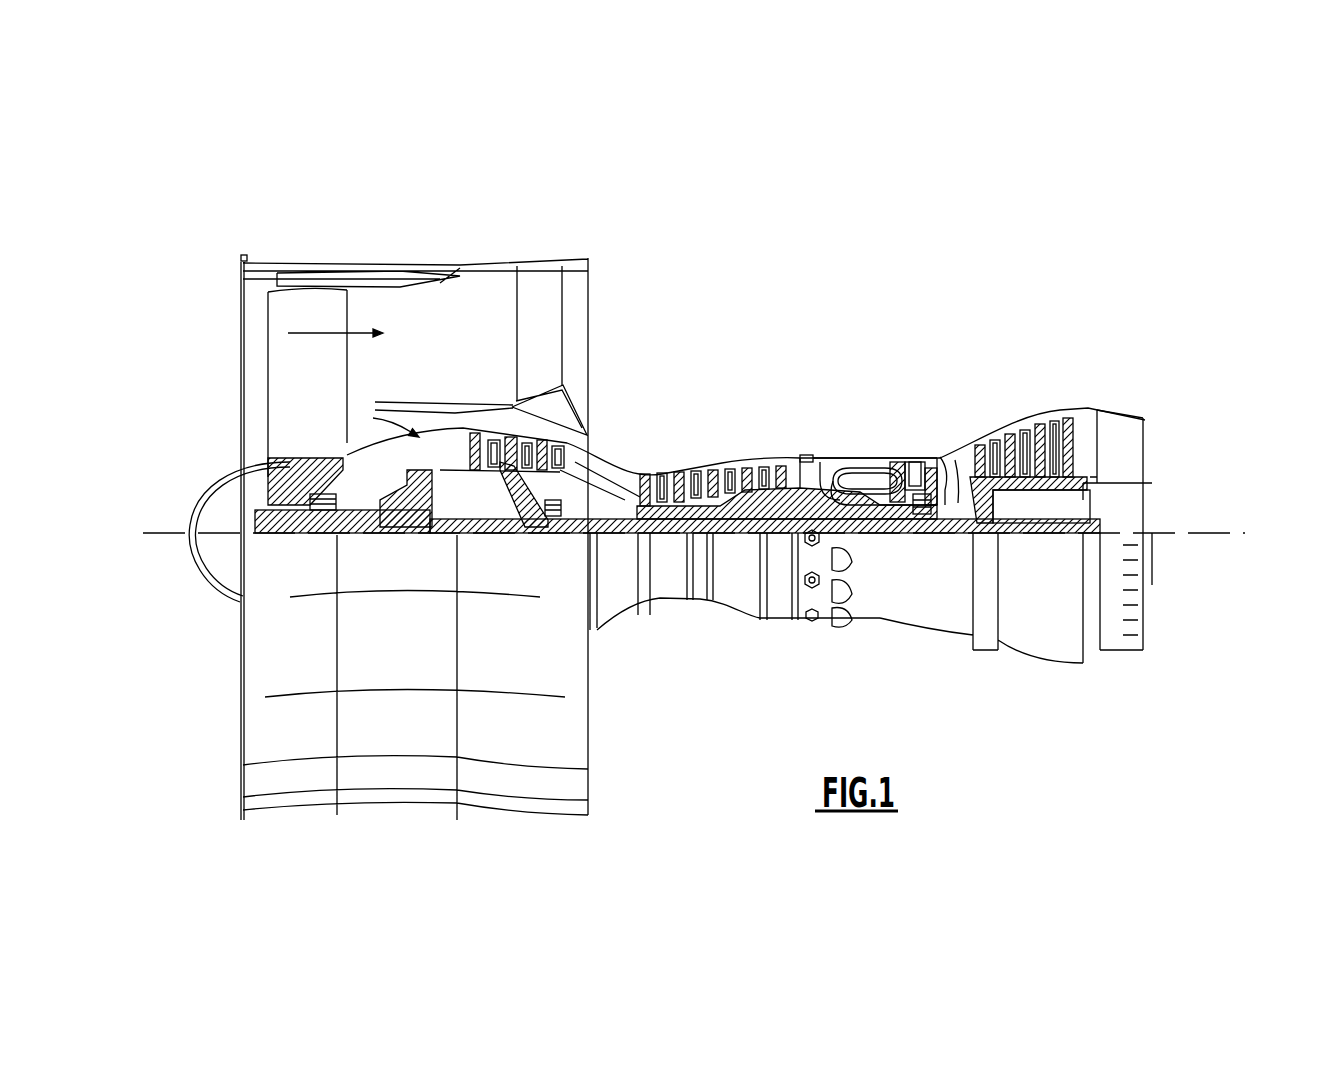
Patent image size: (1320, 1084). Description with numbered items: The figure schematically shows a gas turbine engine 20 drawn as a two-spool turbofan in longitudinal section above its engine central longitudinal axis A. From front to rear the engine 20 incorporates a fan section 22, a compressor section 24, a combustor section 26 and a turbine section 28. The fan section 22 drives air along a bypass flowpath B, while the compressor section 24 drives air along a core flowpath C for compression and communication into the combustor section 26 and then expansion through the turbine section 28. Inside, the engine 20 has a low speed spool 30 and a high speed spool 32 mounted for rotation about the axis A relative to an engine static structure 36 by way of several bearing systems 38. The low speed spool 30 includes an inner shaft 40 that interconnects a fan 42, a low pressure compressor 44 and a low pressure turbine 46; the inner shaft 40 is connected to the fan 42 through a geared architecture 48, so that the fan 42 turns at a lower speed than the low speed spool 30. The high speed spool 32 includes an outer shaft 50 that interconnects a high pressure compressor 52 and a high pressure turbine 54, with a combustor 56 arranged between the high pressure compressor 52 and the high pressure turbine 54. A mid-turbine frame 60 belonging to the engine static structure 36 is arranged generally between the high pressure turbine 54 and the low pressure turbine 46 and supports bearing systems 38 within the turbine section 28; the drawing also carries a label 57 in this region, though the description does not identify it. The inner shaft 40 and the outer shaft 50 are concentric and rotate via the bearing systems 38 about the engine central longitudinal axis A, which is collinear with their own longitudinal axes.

The gas turbine engine 20 is at (855, 312).
The fan section 22 is at (347, 258).
The compressor section 24 is at (634, 444).
The combustor section 26 is at (849, 440).
The turbine section 28 is at (988, 404).
The low speed spool 30 is at (739, 538).
The high speed spool 32 is at (776, 502).
The engine static structure 36 is at (779, 622).
The bearing systems 38 is at (347, 520).
The inner shaft 40 is at (612, 540).
The fan 42 is at (320, 387).
The low pressure compressor 44 is at (523, 442).
The low pressure turbine 46 is at (1037, 427).
The geared architecture 48 is at (422, 518).
The outer shaft 50 is at (853, 527).
The high pressure compressor 52 is at (712, 510).
The high pressure turbine 54 is at (915, 458).
The combustor 56 is at (850, 478).
The mid-turbine frame 57 is at (953, 447).
The mid-turbine frame 60 is at (973, 477).
The engine central longitudinal axis A is at (1233, 531).
The bypass flowpath B is at (320, 333).
The core flowpath C is at (373, 418).